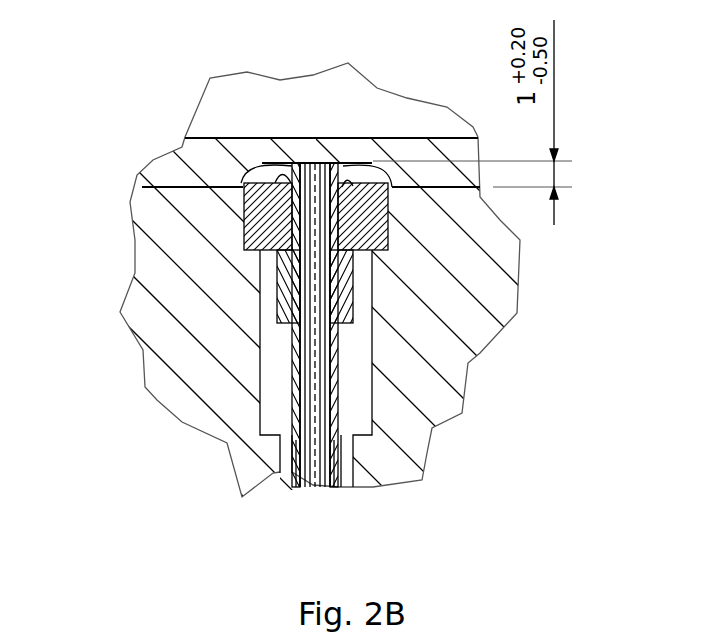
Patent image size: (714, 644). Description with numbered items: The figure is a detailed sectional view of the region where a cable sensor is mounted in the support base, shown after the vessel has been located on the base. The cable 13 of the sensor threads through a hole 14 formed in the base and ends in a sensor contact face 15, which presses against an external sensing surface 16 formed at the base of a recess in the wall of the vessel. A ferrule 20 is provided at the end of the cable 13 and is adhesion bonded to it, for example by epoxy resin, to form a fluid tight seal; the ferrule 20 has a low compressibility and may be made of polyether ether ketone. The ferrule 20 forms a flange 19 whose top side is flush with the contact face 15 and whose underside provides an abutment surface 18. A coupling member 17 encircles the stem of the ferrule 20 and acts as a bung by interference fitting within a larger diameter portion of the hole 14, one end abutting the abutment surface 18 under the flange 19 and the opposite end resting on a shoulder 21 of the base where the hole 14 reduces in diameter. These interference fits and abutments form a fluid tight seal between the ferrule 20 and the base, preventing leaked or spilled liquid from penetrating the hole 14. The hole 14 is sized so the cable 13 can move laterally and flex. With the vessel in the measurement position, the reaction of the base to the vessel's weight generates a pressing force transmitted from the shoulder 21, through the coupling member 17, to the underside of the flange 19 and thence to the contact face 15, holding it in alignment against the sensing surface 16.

The cable 13 is at (337, 463).
The hole 14 is at (258, 398).
The sensor contact face 15 is at (323, 165).
The sensing surface 16 is at (312, 167).
The coupling member 17 is at (263, 222).
The abutment surface 18 is at (353, 184).
The flange 19 is at (287, 177).
The ferrule 20 is at (335, 300).
The shoulder 21 is at (372, 252).